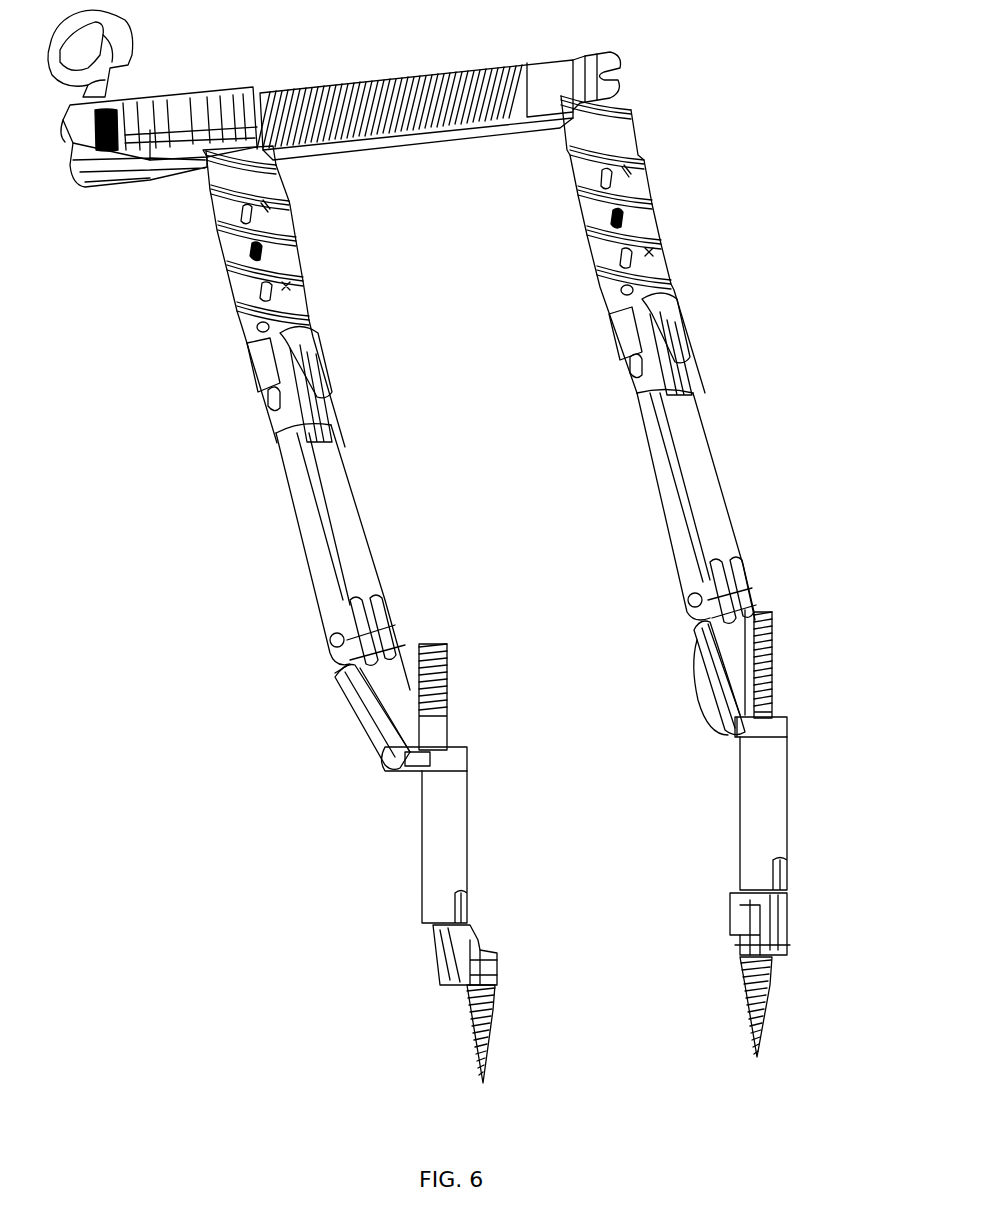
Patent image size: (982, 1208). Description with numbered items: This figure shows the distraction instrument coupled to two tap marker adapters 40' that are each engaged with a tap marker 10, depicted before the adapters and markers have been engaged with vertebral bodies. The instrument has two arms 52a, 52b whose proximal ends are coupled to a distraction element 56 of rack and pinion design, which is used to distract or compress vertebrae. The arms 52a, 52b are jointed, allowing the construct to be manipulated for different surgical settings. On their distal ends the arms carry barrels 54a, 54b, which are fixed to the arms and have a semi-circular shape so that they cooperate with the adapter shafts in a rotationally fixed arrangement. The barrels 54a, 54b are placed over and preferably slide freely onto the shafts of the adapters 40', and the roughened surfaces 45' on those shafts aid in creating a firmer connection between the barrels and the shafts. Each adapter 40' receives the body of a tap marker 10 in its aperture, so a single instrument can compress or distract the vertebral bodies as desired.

The distraction element 56 is at (381, 85).
The arm 52a is at (697, 440).
The arm 52b is at (300, 495).
The roughened surface 45' is at (631, 667).
The barrel 54a is at (762, 770).
The barrel 54b is at (432, 830).
The tap marker adapter 40' is at (610, 939).
The tap marker 10 is at (470, 1040).